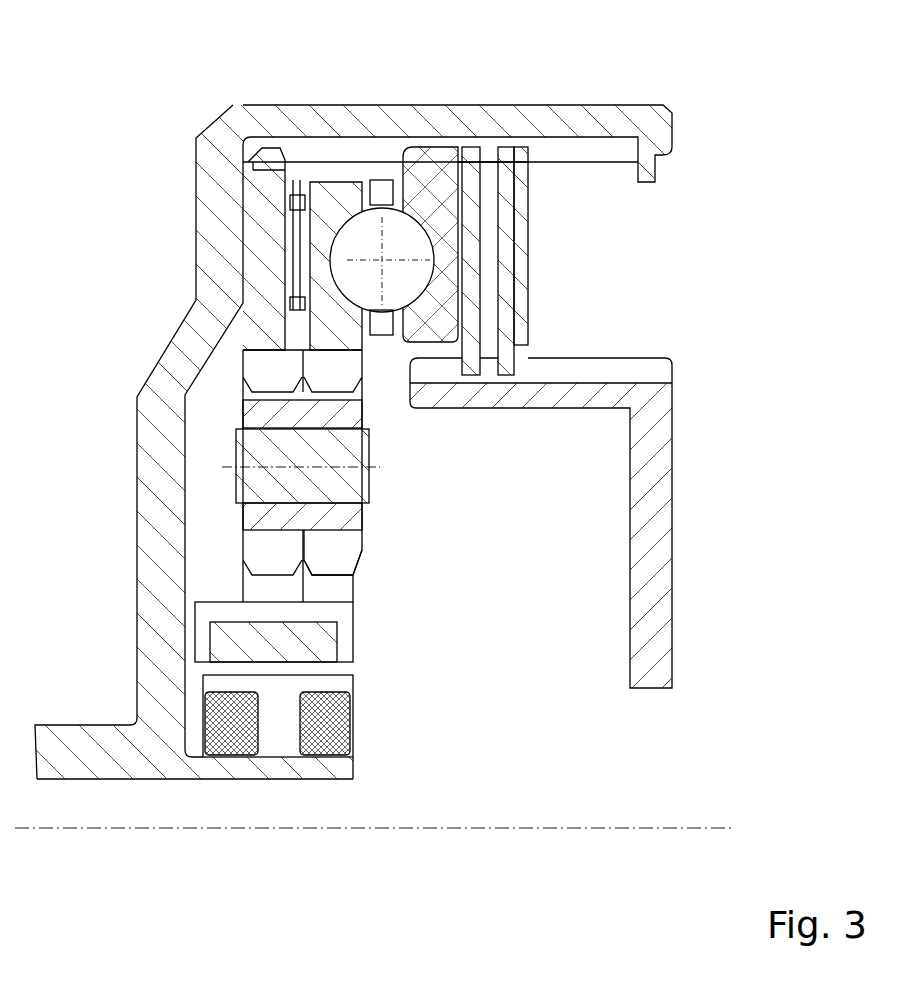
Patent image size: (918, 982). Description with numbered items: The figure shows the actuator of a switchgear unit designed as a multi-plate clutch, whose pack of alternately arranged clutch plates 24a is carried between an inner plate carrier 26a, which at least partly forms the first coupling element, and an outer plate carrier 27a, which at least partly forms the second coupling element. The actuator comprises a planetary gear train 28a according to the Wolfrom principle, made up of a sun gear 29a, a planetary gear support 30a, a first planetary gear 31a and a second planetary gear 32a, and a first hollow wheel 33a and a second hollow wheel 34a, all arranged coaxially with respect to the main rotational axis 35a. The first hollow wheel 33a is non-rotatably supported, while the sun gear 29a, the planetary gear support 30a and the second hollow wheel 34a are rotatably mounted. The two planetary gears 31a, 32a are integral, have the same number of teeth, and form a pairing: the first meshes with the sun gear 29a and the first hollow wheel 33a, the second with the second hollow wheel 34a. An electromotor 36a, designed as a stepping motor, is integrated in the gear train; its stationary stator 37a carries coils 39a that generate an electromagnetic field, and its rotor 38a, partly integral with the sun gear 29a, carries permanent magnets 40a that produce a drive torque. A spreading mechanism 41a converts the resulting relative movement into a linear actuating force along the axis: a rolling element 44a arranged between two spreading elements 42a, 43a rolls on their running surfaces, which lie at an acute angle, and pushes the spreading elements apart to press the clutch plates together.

The clutch plate 24a is at (562, 253).
The inner plate carrier 26a is at (548, 400).
The outer plate carrier 27a is at (623, 119).
The planetary gear train 28a is at (234, 404).
The sun gear 29a is at (243, 595).
The planetary gear support 30a is at (340, 480).
The first planetary gear 31a is at (242, 547).
The second planetary gear 32a is at (343, 553).
The first hollow wheel 33a is at (265, 213).
The second hollow wheel 34a is at (320, 185).
The main rotational axis 35a is at (603, 830).
The electromotor 36a is at (233, 782).
The stator 37a is at (277, 717).
The rotor 38a is at (205, 612).
The coil 39a is at (355, 720).
The permanent magnet 40a is at (218, 628).
The spreading mechanism 41a is at (393, 176).
The spreading element 42a is at (355, 187).
The spreading element 43a is at (433, 187).
The rolling element 44a is at (531, 283).